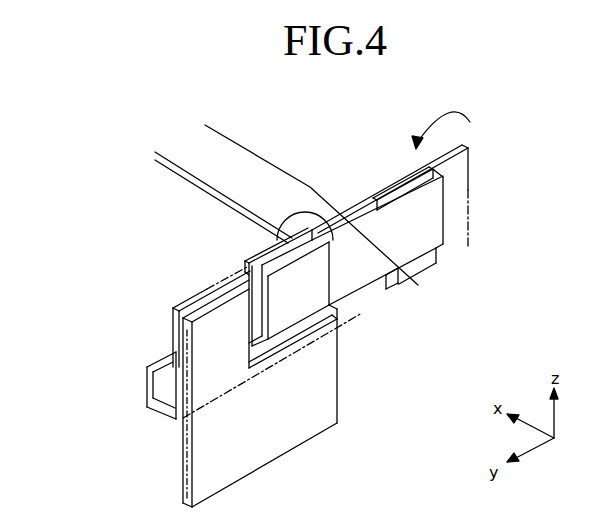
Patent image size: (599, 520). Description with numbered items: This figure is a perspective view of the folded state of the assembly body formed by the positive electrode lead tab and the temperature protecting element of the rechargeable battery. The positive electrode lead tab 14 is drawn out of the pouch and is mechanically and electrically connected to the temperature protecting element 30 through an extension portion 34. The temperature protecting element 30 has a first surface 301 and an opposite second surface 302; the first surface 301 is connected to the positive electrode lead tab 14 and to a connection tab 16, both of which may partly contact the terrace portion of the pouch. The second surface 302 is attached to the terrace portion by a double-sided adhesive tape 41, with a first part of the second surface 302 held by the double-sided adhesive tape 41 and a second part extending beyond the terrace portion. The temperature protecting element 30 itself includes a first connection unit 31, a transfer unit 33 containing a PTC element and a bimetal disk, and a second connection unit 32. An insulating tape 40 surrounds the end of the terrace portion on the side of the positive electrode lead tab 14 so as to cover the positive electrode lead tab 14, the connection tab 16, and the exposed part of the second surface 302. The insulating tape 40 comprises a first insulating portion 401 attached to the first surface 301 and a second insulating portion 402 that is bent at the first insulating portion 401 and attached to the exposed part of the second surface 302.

The positive electrode lead tab 14 is at (237, 156).
The connection tab 16 is at (273, 436).
The temperature protecting element 30 is at (305, 333).
The first connection unit 31 is at (343, 215).
The second connection unit 32 is at (215, 298).
The transfer unit 33 is at (386, 263).
The extension portion 34 is at (340, 283).
The insulating tape 40 is at (247, 282).
The double-sided adhesive tape 41 is at (263, 248).
The first surface 301 is at (318, 267).
The second surface 302 is at (398, 275).
The first insulating portion 401 is at (173, 331).
The second insulating portion 402 is at (147, 378).